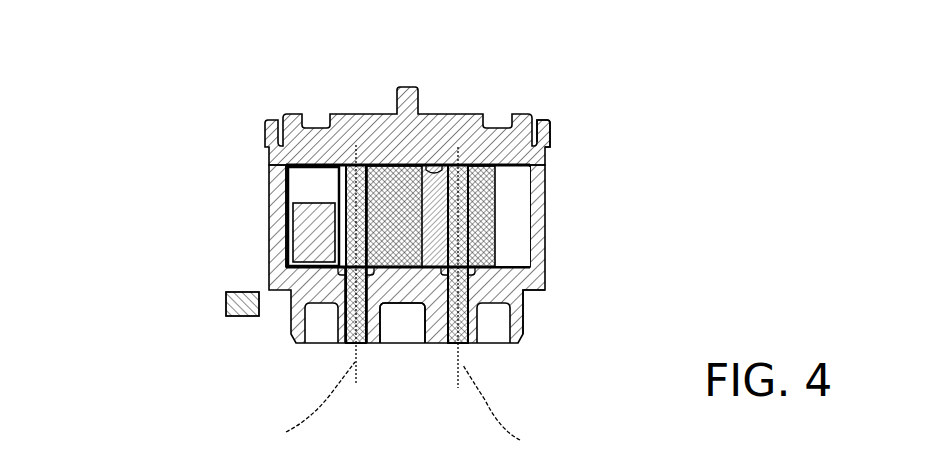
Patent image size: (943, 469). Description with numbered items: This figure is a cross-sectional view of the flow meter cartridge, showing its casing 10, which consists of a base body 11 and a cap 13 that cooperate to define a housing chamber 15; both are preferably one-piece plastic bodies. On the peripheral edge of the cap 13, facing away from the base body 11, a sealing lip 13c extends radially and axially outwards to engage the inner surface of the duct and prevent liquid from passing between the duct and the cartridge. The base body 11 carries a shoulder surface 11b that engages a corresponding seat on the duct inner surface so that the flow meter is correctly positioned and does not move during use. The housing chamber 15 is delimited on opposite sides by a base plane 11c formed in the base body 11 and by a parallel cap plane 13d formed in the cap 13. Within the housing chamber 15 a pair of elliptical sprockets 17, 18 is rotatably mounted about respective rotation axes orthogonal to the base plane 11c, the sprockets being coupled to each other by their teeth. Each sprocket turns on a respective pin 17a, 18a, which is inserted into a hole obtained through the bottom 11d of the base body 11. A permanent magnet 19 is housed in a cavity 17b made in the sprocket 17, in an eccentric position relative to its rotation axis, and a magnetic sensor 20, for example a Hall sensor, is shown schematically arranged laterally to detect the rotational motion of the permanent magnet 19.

The casing 10 is at (370, 235).
The base body 11 is at (478, 295).
The shoulder surface 11b is at (537, 297).
The base plane 11c is at (540, 255).
The bottom 11d is at (404, 300).
The cap 13 is at (463, 140).
The sealing lip 13c is at (548, 127).
The cap plane 13d is at (428, 172).
The housing chamber 15 is at (512, 223).
The elliptical sprocket 17 is at (261, 218).
The pin 17a is at (340, 327).
The cavity 17b is at (302, 192).
The elliptical sprocket 18 is at (555, 267).
The pin 18a is at (492, 345).
The permanent magnet 19 is at (315, 224).
The magnetic sensor 20 is at (227, 303).